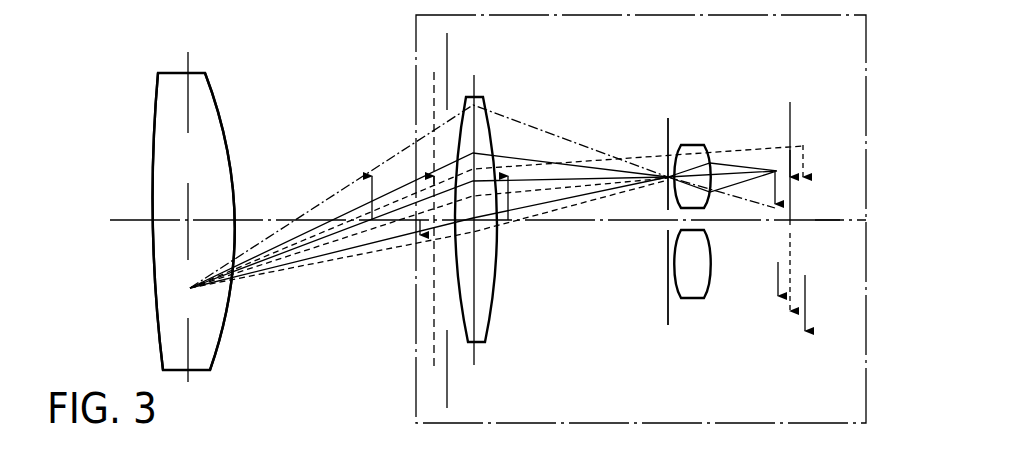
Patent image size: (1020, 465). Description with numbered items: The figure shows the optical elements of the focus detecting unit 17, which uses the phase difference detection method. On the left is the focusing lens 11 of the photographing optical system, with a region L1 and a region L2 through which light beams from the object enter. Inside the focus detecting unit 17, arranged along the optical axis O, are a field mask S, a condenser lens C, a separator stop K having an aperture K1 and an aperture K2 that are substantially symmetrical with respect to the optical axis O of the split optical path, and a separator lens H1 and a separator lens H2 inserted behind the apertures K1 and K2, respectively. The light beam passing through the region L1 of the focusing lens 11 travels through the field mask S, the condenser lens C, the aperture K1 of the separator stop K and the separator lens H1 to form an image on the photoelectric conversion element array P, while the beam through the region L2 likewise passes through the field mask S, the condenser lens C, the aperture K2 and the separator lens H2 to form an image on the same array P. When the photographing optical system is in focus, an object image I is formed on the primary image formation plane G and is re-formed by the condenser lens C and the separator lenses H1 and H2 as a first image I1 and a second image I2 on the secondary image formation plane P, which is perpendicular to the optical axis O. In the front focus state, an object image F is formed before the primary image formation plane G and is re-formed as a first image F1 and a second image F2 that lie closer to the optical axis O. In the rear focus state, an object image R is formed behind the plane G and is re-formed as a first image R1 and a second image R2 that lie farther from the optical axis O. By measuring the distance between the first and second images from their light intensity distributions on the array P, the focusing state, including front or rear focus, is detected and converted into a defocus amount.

The focus detecting unit 17 is at (416, 38).
The focusing lens 11 is at (222, 114).
The region of the focusing lens L1 is at (188, 278).
The region of the focusing lens L2 is at (187, 110).
The primary image formation plane G is at (434, 85).
The field mask S is at (447, 50).
The condenser lens C is at (488, 118).
The object image F is at (367, 197).
The object image I is at (418, 243).
The object image R is at (522, 216).
The separator stop K is at (668, 118).
The aperture K1 is at (668, 165).
The aperture K2 is at (668, 258).
The separator lens H1 is at (690, 145).
The separator lens H2 is at (691, 300).
The photoelectric conversion element array P is at (790, 105).
The first image I1 is at (788, 178).
The second image I2 is at (789, 308).
The first image R1 is at (806, 148).
The second image R2 is at (808, 290).
The first image F1 is at (773, 208).
The second image F2 is at (776, 283).
The optical axis O is at (827, 217).